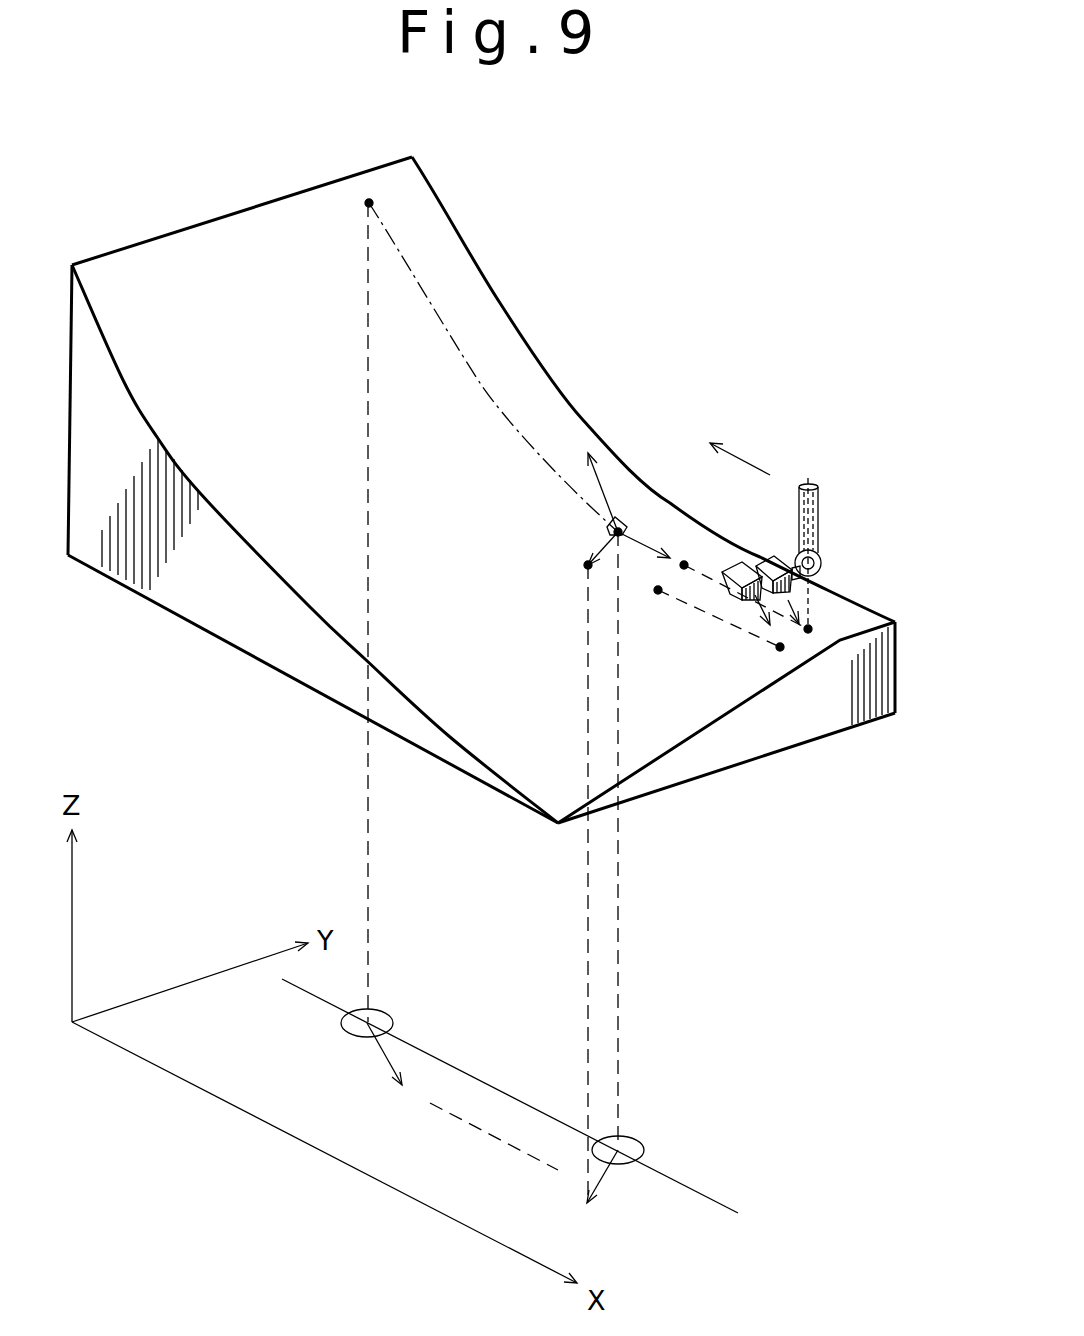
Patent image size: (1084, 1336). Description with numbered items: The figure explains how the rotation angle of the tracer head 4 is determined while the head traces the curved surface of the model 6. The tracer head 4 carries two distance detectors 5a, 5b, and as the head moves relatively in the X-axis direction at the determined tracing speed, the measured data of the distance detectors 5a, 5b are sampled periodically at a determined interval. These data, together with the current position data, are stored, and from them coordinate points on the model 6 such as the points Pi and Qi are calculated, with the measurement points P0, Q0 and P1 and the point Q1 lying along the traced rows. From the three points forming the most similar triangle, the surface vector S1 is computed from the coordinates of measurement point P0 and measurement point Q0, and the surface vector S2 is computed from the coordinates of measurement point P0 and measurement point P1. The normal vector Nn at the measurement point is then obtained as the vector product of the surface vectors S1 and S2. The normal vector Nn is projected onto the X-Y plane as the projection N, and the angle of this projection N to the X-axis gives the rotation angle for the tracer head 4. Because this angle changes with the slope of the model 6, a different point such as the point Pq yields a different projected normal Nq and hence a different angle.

The tracer head 4 is at (818, 505).
The distance detector 5a is at (800, 590).
The distance detector 5b is at (732, 598).
The model 6 is at (240, 208).
The point Pq is at (369, 199).
The measurement point P0 is at (628, 518).
The measurement point P1 is at (684, 562).
The point Pi is at (808, 632).
The measurement point Q0 is at (588, 568).
The point Q1 is at (658, 593).
The point Qi is at (780, 650).
The normal vector Nn is at (600, 478).
The surface vector S1 is at (600, 550).
The surface vector S2 is at (660, 543).
The projection of the normal vector N is at (600, 1180).
The projection of the normal vector Nq is at (373, 1057).